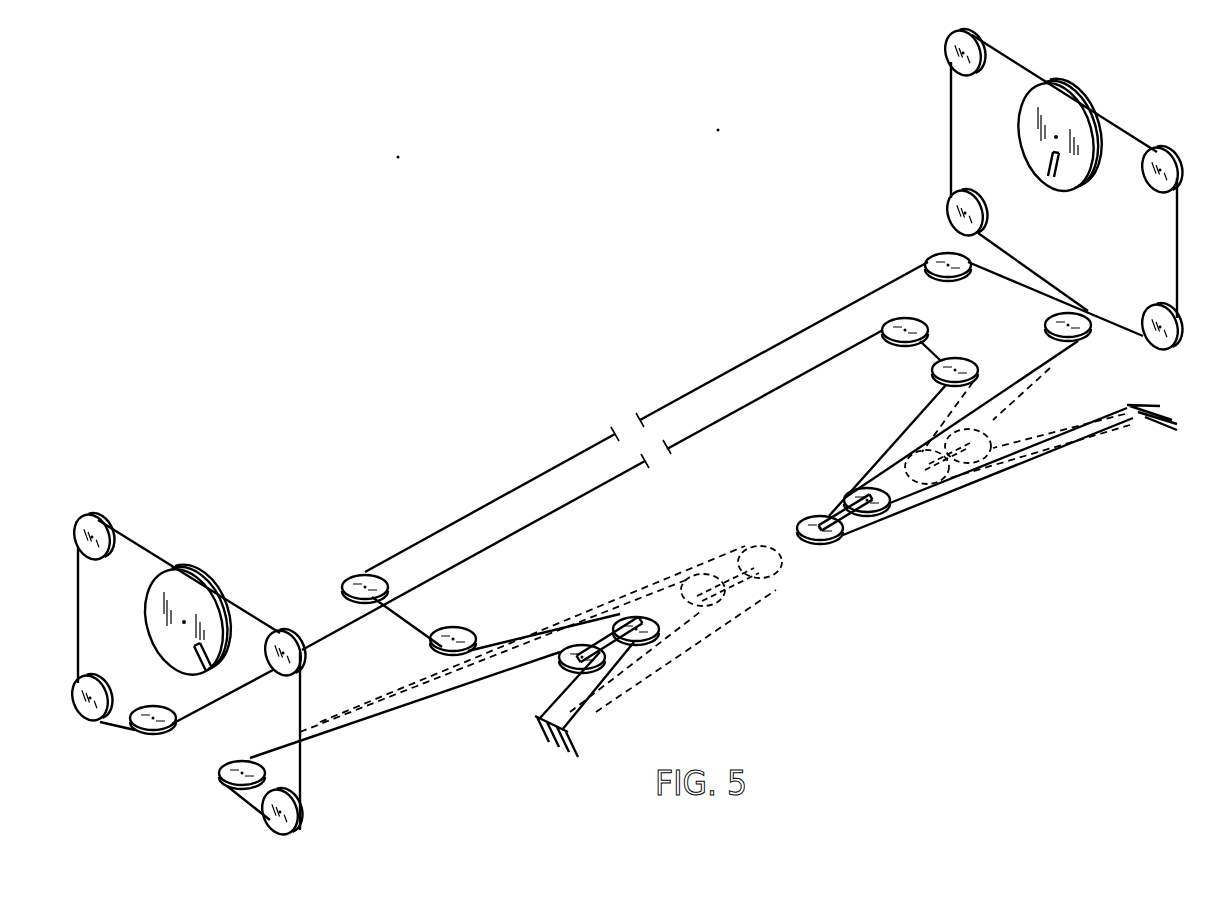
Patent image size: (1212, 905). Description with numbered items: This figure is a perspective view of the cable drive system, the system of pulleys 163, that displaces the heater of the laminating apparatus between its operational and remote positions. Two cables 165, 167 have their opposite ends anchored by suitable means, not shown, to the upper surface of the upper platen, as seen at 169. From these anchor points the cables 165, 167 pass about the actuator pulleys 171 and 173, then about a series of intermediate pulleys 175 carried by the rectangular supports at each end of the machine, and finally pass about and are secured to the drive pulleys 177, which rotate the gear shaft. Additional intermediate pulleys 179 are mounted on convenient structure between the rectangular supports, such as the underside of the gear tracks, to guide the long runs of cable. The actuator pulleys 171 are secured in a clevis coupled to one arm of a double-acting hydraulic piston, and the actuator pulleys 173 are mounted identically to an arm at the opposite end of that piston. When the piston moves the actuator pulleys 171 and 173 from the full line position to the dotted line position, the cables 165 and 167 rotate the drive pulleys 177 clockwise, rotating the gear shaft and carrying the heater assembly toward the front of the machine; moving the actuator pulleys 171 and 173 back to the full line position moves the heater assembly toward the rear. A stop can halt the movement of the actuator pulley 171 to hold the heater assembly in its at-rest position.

The system of pulleys 163 is at (824, 574).
The cable 165 is at (398, 710).
The cable 167 is at (1005, 392).
The anchor point on upper platen 169 is at (570, 736).
The actuator pulleys 171 is at (640, 648).
The actuator pulleys 173 is at (815, 516).
The intermediate pulleys 175 is at (954, 56).
The drive pulleys 177 is at (1069, 180).
The intermediate pulleys 179 is at (358, 575).